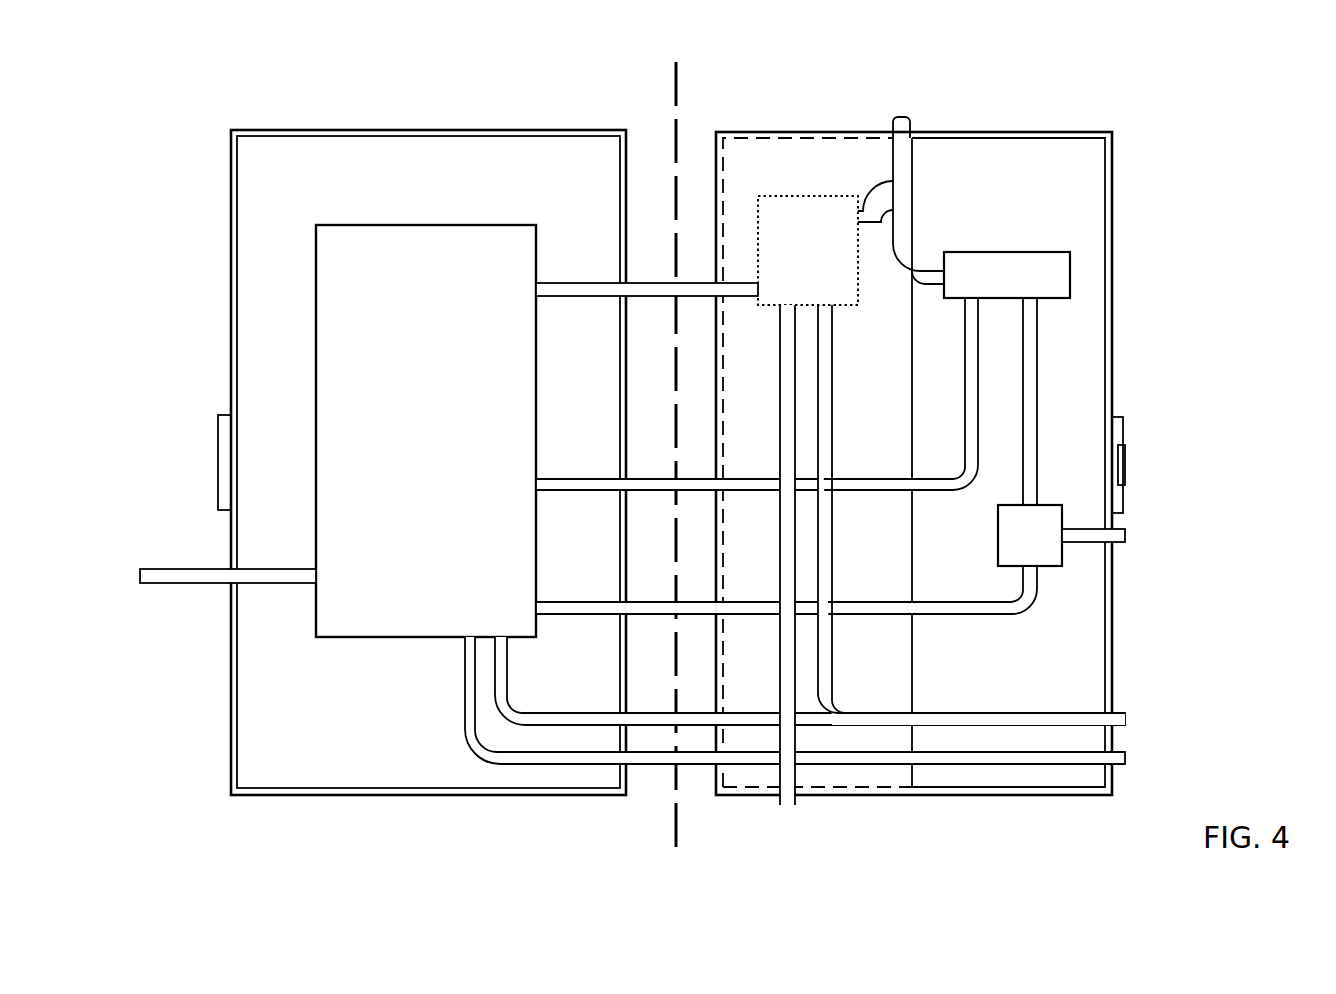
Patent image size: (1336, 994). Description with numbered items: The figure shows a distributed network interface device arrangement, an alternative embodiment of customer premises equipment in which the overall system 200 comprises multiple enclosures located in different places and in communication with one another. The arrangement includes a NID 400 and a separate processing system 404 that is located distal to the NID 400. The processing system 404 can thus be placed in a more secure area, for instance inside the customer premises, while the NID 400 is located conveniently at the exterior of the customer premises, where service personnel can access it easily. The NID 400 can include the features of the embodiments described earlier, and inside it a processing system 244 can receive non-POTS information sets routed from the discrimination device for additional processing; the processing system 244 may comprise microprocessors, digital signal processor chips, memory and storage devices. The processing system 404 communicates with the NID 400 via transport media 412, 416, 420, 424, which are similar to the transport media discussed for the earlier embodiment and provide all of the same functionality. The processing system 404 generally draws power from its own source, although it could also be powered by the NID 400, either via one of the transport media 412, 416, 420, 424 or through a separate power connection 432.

The communication system 200 is at (738, 455).
The processing system 244 is at (362, 638).
The NID 400 is at (972, 788).
The processing system 404 is at (360, 788).
The transport medium 412 is at (855, 478).
The transport medium 416 is at (975, 616).
The transport medium 420 is at (1010, 717).
The transport medium 424 is at (463, 718).
The separate power connection 432 is at (582, 288).